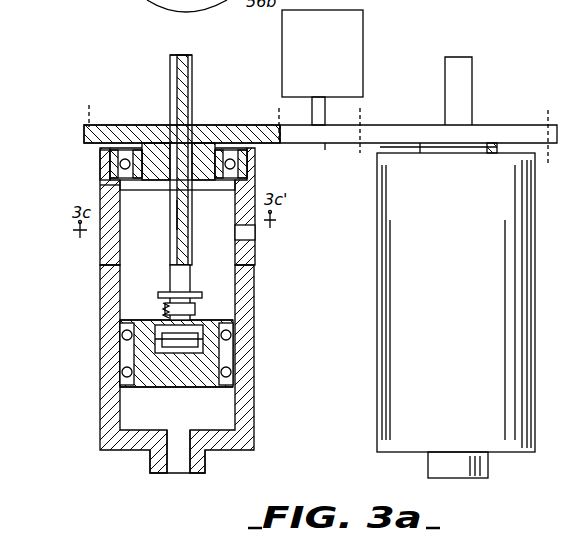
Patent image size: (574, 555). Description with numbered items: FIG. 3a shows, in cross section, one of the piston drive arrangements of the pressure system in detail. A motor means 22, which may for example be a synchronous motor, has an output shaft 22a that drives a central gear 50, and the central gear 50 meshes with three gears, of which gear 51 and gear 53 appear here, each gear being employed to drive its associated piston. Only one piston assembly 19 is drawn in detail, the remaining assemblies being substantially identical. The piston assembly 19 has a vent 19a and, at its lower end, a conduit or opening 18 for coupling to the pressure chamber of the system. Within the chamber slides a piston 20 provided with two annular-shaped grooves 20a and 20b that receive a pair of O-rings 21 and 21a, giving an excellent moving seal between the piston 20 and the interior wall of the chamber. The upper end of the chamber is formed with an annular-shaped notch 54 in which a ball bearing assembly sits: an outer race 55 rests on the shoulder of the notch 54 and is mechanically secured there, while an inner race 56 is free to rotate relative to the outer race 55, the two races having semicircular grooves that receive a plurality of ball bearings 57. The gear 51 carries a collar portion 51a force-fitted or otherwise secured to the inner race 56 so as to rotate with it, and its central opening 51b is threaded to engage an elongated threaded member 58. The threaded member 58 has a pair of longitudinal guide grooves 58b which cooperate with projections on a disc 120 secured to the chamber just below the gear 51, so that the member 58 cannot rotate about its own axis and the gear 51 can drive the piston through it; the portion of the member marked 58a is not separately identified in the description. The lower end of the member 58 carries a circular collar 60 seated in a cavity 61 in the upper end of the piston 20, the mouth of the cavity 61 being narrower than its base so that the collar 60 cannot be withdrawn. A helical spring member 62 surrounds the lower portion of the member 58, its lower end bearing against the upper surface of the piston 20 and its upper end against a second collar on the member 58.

The conduit or opening 18 is at (152, 472).
The piston assembly 19 is at (100, 302).
The vent 19a is at (258, 237).
The piston 20 is at (105, 407).
The annular-shaped groove 20a is at (232, 318).
The annular-shaped groove 20b is at (233, 396).
The O-ring 21 is at (233, 341).
The O-ring 21a is at (233, 372).
The motor means 22 is at (363, 52).
The output shaft 22a is at (323, 118).
The central gear 50 is at (325, 146).
The gear 51 is at (250, 112).
The collar portion 51a is at (196, 182).
The central opening 51b is at (171, 125).
The gear 53 is at (513, 125).
The annular-shaped notch 54 is at (98, 190).
The outer race 55 is at (95, 160).
The inner race 56 is at (130, 182).
The ball bearings 57 is at (110, 168).
The elongated threaded member 58 is at (170, 66).
The shaft upper end 58a is at (190, 55).
The longitudinal guide grooves 58b is at (120, 0).
The circular collar 60 is at (190, 353).
The cavity 61 is at (163, 352).
The helical spring member 62 is at (166, 308).
The disc 120 is at (182, 212).